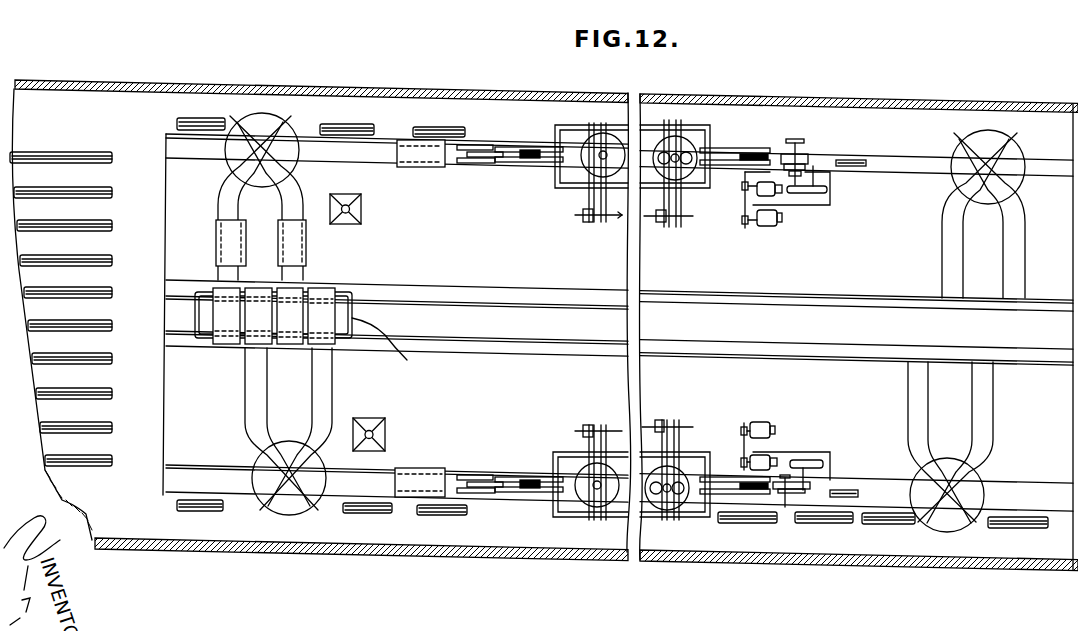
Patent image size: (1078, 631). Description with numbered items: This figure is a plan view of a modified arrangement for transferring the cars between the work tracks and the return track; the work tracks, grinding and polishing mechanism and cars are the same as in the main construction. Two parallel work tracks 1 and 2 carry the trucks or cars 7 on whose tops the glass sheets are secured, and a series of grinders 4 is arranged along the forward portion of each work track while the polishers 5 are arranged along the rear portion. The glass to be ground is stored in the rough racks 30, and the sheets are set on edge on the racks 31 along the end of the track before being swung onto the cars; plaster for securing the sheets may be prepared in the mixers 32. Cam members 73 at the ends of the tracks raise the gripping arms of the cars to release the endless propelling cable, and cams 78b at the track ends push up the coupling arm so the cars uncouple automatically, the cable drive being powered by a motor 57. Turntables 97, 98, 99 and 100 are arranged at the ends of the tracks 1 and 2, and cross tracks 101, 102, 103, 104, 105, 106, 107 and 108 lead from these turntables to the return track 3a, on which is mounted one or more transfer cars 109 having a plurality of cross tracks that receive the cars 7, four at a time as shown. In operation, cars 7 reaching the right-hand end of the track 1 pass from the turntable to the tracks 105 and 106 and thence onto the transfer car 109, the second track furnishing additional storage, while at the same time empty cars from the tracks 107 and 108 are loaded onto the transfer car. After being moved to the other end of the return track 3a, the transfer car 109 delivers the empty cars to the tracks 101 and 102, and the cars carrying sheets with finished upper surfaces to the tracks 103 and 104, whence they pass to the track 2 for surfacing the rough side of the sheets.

The work track 1 is at (375, 158).
The work track 2 is at (379, 469).
The return track 3a is at (512, 318).
The grinders 4 is at (588, 136).
The polishers 5 is at (673, 176).
The trucks or cars 7 is at (224, 232).
The rough racks 30 is at (113, 160).
The racks 31 is at (205, 117).
The mixers 32 is at (356, 223).
The motor 57 is at (763, 228).
The cam members 73 is at (524, 148).
The cams 78b is at (852, 167).
The turntable 97 is at (262, 118).
The turntable 98 is at (989, 130).
The turntable 99 is at (948, 528).
The turntable 100 is at (287, 512).
The cross track 101 is at (214, 268).
The cross track 102 is at (304, 275).
The cross track 103 is at (247, 413).
The cross track 104 is at (333, 383).
The cross track 105 is at (950, 252).
The cross track 106 is at (1022, 280).
The cross track 107 is at (910, 426).
The cross track 108 is at (989, 413).
The transfer car 109 is at (397, 347).